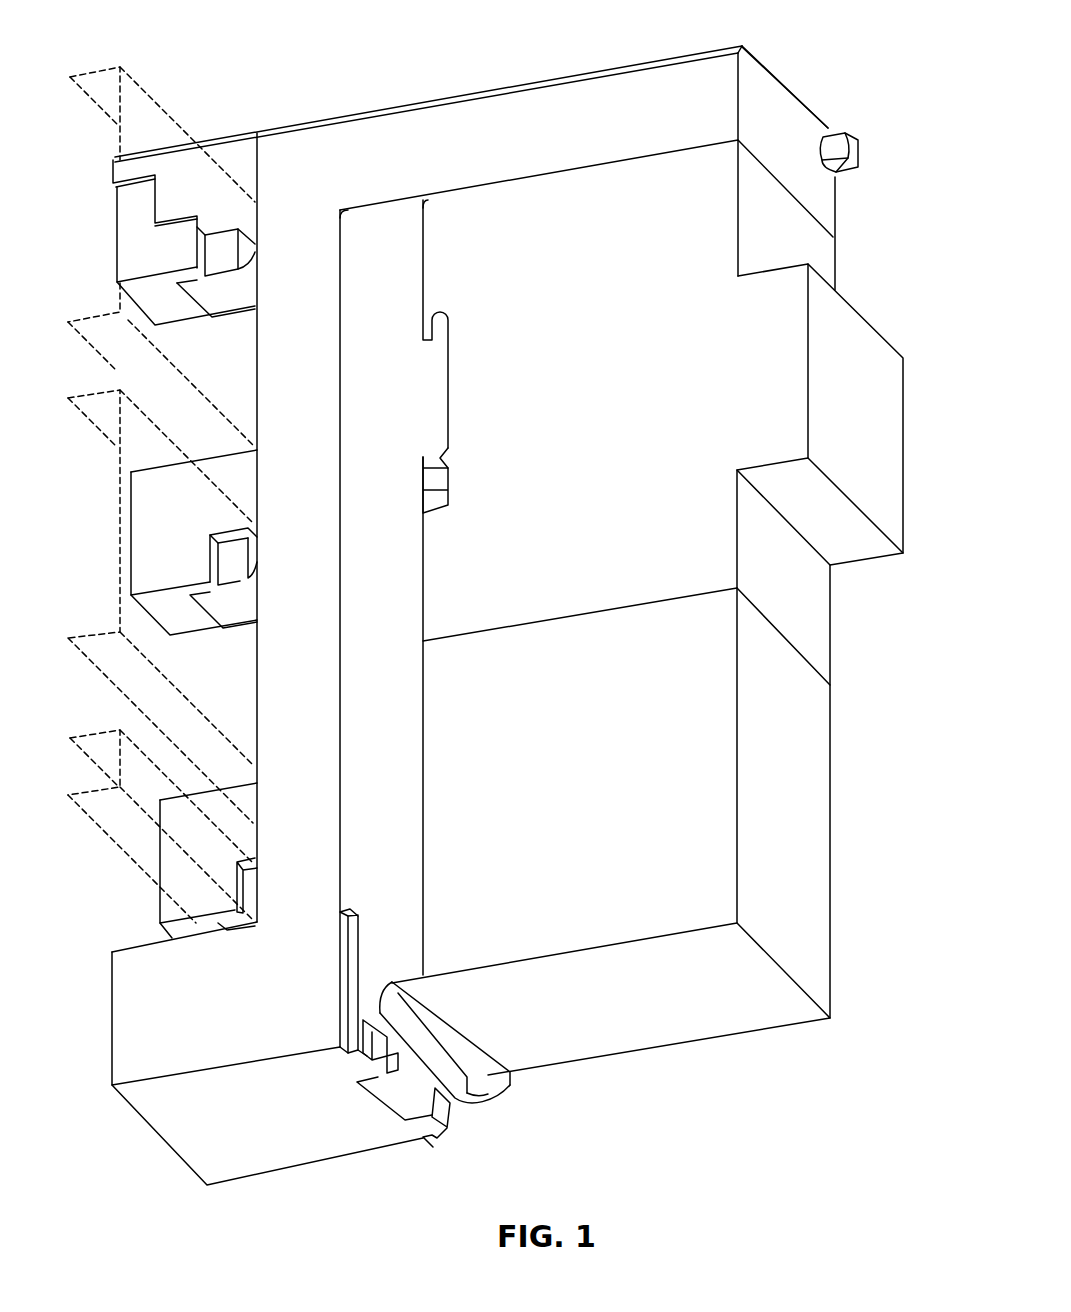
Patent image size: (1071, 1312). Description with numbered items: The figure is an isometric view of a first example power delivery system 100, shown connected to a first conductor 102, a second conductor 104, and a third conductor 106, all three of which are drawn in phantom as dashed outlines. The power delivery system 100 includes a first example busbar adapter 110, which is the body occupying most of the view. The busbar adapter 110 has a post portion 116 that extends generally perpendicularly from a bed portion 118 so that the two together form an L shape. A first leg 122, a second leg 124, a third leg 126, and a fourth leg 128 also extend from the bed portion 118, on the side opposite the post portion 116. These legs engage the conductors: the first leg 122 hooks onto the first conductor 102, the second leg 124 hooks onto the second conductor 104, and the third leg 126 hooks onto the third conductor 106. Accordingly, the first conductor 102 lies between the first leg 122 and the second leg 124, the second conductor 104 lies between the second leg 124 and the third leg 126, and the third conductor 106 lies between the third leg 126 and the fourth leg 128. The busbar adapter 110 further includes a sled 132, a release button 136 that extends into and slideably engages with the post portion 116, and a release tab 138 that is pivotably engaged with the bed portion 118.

The power delivery system 100 is at (561, 41).
The first conductor 102 is at (102, 70).
The second conductor 104 is at (85, 405).
The third conductor 106 is at (95, 740).
The busbar adapter 110 is at (330, 120).
The post portion 116 is at (667, 75).
The bed portion 118 is at (287, 215).
The first leg 122 is at (167, 190).
The second leg 124 is at (160, 523).
The third leg 126 is at (187, 858).
The fourth leg 128 is at (128, 1010).
The sled 132 is at (387, 220).
The release button 136 is at (850, 150).
The release tab 138 is at (440, 1100).